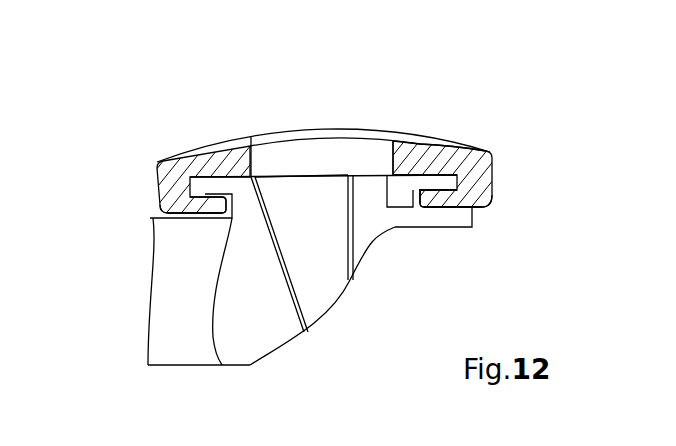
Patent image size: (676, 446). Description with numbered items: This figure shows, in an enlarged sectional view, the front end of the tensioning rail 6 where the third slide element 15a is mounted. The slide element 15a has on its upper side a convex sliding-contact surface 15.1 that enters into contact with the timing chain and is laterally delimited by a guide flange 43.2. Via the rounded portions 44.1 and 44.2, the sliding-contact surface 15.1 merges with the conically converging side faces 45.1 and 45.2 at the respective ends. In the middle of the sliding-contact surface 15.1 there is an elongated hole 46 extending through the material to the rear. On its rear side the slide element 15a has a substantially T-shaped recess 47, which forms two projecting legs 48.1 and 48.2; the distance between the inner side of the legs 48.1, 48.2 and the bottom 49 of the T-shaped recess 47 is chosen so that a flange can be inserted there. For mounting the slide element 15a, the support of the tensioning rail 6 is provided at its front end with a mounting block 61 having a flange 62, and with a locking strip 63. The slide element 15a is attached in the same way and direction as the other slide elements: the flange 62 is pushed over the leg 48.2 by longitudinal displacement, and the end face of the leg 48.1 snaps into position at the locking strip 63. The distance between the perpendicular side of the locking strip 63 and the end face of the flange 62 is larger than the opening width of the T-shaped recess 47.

The rounded portion 44.1 is at (155, 166).
The conically converging side face 45.1 is at (162, 200).
The projecting leg 48.1 is at (158, 214).
The rounded portion 44.2 is at (493, 153).
The conically converging side face 45.2 is at (492, 191).
The projecting leg 48.2 is at (490, 207).
The guide flange 43.2 is at (393, 146).
The sliding-contact surface 15.1 is at (430, 148).
The third slide element 15a is at (482, 151).
The elongated hole 46 is at (335, 158).
The mounting block 61 is at (307, 192).
The flange 62 is at (222, 365).
The tensioning rail 6 is at (344, 320).
The T-shaped recess 47 is at (412, 184).
The bottom 49 is at (406, 173).
The locking strip 63 is at (421, 206).